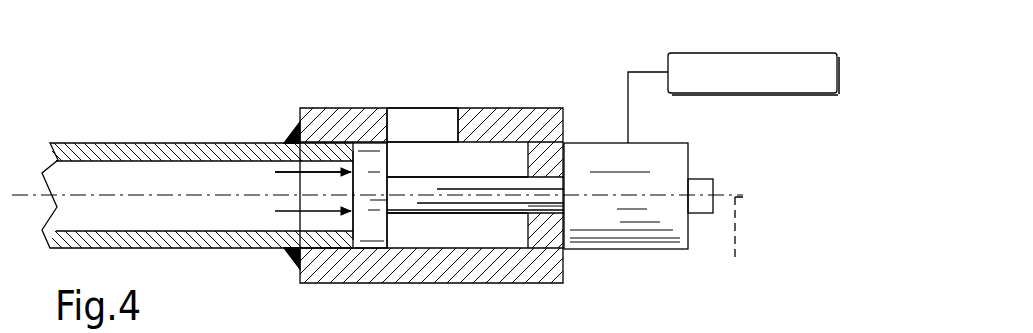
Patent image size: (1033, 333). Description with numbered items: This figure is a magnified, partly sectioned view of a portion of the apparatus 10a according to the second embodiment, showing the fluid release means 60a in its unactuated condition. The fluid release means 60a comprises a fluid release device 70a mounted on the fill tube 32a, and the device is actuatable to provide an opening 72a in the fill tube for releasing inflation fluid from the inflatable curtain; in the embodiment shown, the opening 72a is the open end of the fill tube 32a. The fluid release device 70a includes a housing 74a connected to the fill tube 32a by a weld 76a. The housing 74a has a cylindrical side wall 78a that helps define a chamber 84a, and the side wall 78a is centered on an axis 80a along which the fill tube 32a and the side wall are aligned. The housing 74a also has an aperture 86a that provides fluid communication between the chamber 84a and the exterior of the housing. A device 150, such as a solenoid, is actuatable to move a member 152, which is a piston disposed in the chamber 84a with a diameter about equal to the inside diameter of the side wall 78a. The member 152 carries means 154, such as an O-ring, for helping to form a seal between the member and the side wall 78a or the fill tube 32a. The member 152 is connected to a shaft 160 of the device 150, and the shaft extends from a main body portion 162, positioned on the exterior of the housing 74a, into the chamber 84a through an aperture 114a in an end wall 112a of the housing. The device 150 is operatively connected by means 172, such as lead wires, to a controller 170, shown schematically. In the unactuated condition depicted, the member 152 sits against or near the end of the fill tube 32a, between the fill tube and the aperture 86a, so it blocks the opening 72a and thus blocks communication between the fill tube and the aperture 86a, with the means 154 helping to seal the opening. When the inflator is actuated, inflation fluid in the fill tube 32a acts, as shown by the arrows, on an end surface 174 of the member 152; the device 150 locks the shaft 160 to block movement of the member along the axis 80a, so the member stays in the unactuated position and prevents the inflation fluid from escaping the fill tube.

The apparatus 10a is at (165, 90).
The fill tube 32a is at (100, 152).
The fluid release means 60a is at (283, 58).
The fluid release device 70a is at (222, 70).
The opening 72a is at (354, 223).
The housing 74a is at (335, 123).
The weld 76a is at (292, 140).
The cylindrical side wall 78a is at (370, 142).
The axis 80a is at (745, 242).
The chamber 84a is at (493, 168).
The aperture 86a is at (435, 125).
The end wall 112a is at (548, 150).
The aperture 114a is at (553, 200).
The device 150 is at (593, 163).
The member 152 is at (368, 202).
The means for helping to form a seal 154 is at (370, 249).
The shaft 160 is at (488, 205).
The main body portion 162 is at (633, 222).
The controller 170 is at (730, 53).
The means such as lead wires 172 is at (640, 72).
The end surface 174 is at (275, 172).